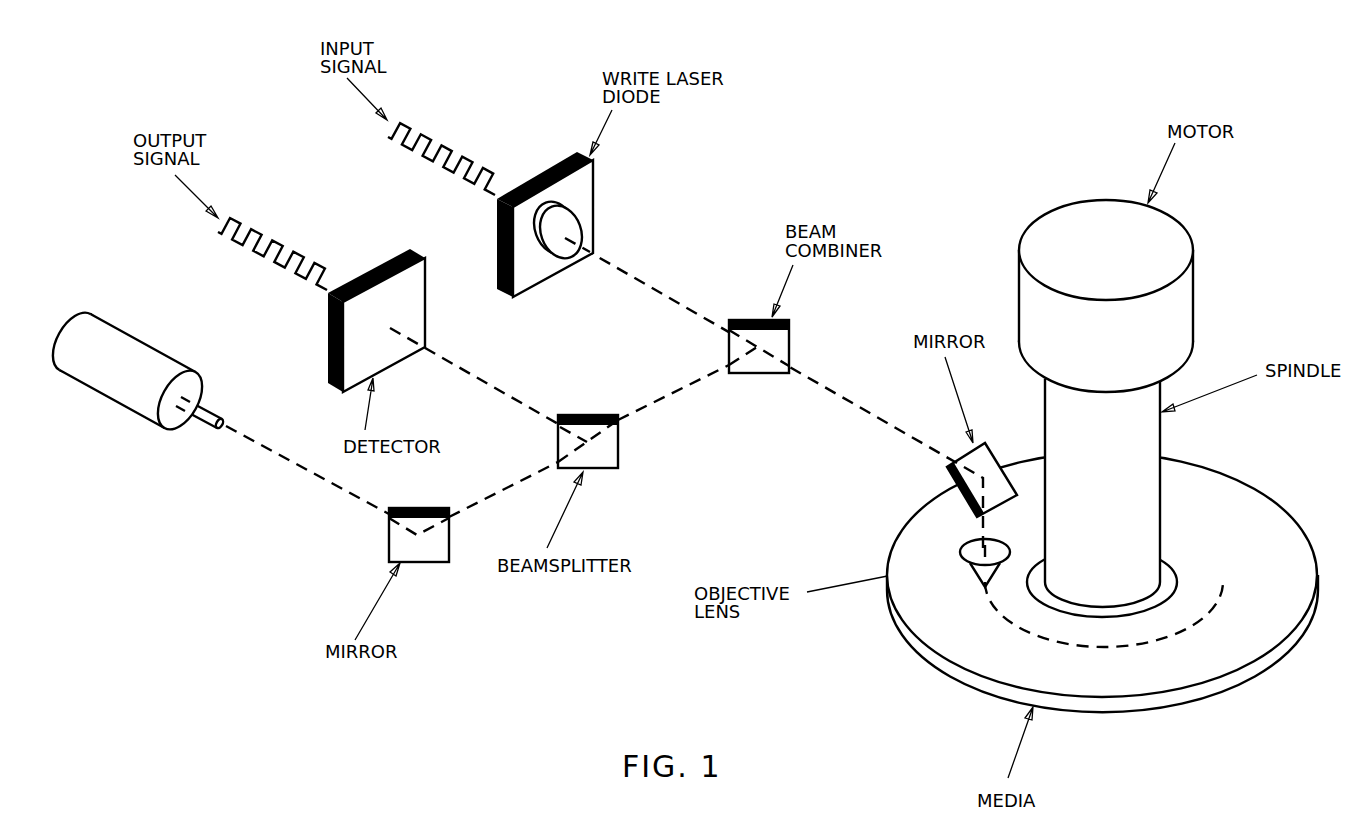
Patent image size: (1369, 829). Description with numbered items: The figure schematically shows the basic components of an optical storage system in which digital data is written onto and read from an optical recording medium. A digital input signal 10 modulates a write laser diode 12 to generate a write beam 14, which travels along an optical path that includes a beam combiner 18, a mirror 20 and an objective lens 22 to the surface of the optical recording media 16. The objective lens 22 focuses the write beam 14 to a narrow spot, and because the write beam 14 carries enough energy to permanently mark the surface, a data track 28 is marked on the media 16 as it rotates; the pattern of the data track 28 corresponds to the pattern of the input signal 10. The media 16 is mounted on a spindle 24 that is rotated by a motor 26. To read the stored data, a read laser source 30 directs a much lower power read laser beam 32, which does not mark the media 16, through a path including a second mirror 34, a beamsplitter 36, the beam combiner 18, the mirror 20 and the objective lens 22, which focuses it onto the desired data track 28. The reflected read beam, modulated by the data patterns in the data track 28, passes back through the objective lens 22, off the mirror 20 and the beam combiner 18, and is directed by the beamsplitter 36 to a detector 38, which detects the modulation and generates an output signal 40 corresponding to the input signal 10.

The digital input signal 10 is at (363, 102).
The write laser diode 12 is at (594, 193).
The write beam 14 is at (663, 296).
The optical recording media 16 is at (1257, 512).
The beam combiner 18 is at (750, 375).
The mirror 20 is at (983, 445).
The objective lens 22 is at (962, 550).
The spindle 24 is at (1161, 477).
The motor 26 is at (1194, 268).
The data track 28 is at (1223, 583).
The read laser source 30 is at (128, 403).
The read laser beam 32 is at (297, 467).
The second mirror 34 is at (418, 563).
The beamsplitter 36 is at (620, 448).
The detector 38 is at (427, 322).
The output signal 40 is at (193, 198).